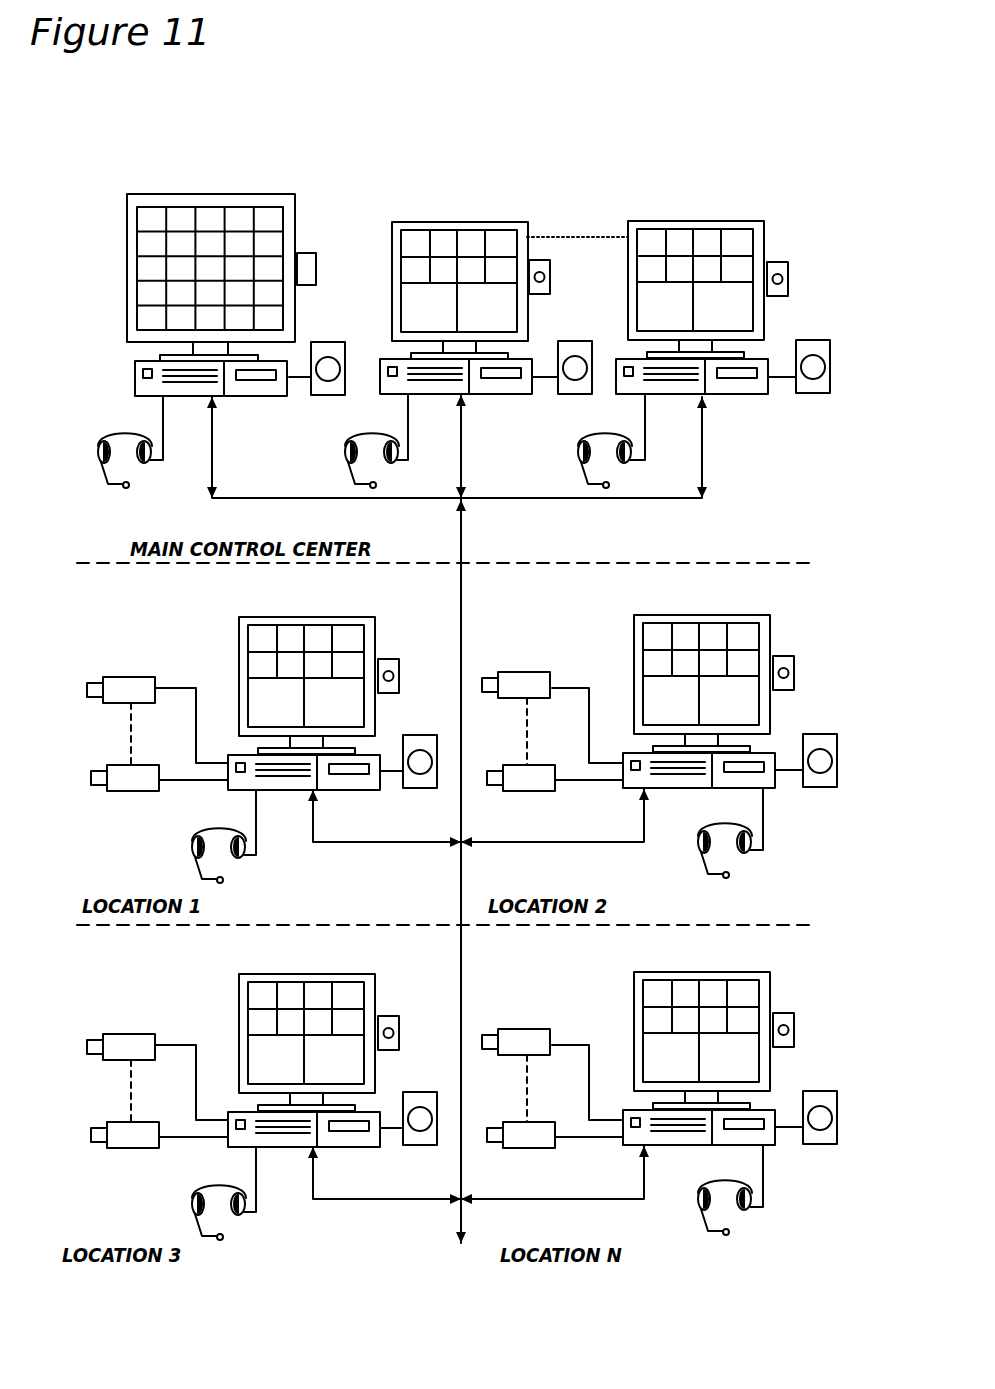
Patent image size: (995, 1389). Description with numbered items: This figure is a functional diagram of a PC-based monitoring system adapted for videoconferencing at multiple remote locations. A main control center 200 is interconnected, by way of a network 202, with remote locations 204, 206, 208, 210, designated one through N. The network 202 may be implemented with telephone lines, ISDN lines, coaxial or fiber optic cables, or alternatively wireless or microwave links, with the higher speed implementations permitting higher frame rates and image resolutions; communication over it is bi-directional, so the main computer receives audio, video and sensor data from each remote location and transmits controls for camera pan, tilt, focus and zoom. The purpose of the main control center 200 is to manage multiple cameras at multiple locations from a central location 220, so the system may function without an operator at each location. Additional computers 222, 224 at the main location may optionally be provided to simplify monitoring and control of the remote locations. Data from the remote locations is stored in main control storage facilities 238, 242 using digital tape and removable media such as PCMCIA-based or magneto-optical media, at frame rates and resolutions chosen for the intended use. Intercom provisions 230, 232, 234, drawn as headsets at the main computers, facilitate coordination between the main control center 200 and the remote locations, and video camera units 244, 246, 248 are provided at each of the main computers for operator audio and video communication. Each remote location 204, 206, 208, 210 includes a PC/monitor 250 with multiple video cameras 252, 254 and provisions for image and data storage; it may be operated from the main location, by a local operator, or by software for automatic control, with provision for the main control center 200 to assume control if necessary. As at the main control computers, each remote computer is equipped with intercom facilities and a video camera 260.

The main control center 200 is at (110, 264).
The network 202 is at (680, 498).
The remote location 204 is at (116, 606).
The remote location 206 is at (784, 609).
The remote location 208 is at (118, 969).
The remote location 210 is at (784, 964).
The central location 220 is at (126, 231).
The additional computer 222 is at (376, 208).
The additional computer 224 is at (787, 212).
The intercom provision 230 is at (94, 474).
The intercom provision 232 is at (331, 472).
The intercom provision 234 is at (571, 467).
The main control storage facility 238 is at (134, 383).
The main control storage facility 242 is at (735, 397).
The video camera unit 244 is at (317, 274).
The video camera unit 246 is at (551, 278).
The video camera unit 248 is at (790, 280).
The PC/monitor 250 is at (238, 647).
The video camera 252 is at (113, 703).
The video camera 254 is at (118, 792).
The video camera 260 is at (398, 665).